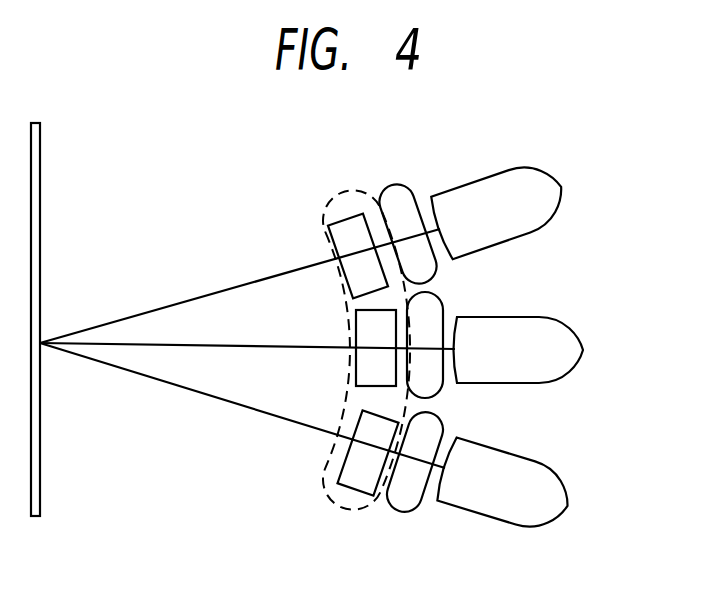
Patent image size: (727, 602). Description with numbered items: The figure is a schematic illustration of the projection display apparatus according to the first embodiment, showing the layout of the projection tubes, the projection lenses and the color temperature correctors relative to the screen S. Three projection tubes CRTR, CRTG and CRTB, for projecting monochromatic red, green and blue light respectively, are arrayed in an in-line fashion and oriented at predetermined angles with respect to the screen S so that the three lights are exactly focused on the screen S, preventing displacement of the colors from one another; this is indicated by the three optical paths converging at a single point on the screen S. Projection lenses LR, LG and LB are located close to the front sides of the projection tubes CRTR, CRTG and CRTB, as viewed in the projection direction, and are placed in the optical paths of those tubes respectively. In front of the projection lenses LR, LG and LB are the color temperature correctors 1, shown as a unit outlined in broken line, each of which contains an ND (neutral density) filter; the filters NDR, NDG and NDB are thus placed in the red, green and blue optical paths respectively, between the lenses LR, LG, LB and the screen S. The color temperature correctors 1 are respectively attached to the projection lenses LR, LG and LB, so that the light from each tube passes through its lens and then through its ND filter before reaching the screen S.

The screen S is at (40, 133).
The color temperature corrector 1 is at (351, 506).
The ND filter for red NDR is at (333, 224).
The ND filter for green NDG is at (356, 365).
The ND filter for blue NDB is at (340, 462).
The projection lens for red LR is at (388, 186).
The projection lens for green LG is at (443, 305).
The projection lens for blue LB is at (445, 432).
The projection tube for red CRTR is at (515, 170).
The projection tube for green CRTG is at (555, 317).
The projection tube for blue CRTB is at (560, 480).